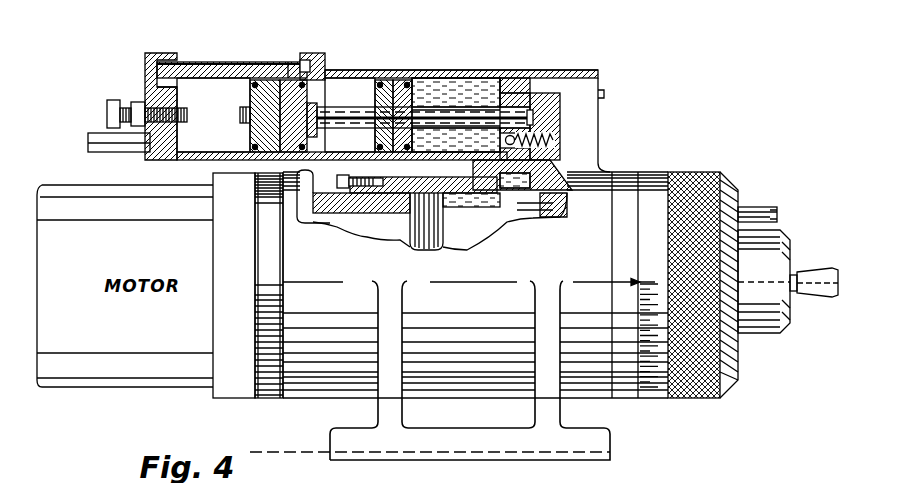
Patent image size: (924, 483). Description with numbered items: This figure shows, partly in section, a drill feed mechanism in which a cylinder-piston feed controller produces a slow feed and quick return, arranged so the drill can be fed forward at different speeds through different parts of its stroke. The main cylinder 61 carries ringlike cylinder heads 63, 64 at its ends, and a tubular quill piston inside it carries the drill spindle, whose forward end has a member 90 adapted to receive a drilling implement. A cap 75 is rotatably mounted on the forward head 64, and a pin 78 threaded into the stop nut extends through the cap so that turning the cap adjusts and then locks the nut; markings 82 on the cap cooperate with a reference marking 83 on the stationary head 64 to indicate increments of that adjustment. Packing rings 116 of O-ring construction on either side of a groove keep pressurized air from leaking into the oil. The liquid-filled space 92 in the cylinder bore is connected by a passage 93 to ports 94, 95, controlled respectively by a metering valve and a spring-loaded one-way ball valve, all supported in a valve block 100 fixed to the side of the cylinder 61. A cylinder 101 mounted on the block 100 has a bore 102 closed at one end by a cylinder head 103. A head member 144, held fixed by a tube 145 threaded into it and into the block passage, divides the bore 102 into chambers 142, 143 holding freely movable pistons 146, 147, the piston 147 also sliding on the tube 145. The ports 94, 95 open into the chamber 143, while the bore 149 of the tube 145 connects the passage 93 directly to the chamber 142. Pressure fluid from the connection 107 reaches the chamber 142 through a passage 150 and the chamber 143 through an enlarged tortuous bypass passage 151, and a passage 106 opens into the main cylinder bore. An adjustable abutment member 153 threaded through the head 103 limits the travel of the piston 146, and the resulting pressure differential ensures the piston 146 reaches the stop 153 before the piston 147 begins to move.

The cylinder 61 is at (570, 395).
The cylinder head 63 is at (355, 386).
The cylinder head 64 is at (625, 177).
The cap 75 is at (707, 173).
The pin 78 is at (757, 210).
The markings 82 is at (642, 355).
The reference marking 83 is at (636, 279).
The member 90 is at (815, 280).
The space 92 is at (470, 201).
The passage 93 is at (553, 147).
The port 94 is at (500, 88).
The port 95 is at (456, 140).
The valve block 100 is at (560, 71).
The cylinder 101 is at (480, 70).
The bore 102 is at (445, 83).
The cylinder head 103 is at (158, 53).
The passage 106 is at (299, 226).
The pressure fluid connection 107 is at (93, 133).
The packing rings 116 is at (418, 238).
The chamber 142 is at (209, 62).
The chamber 143 is at (338, 88).
The head member 144 is at (325, 62).
The tube 145 is at (370, 105).
The piston 146 is at (252, 80).
The piston 147 is at (398, 100).
The bore 149 is at (457, 118).
The passage 150 is at (181, 148).
The bypass passage 151 is at (157, 87).
The adjustable abutment member 153 is at (188, 122).